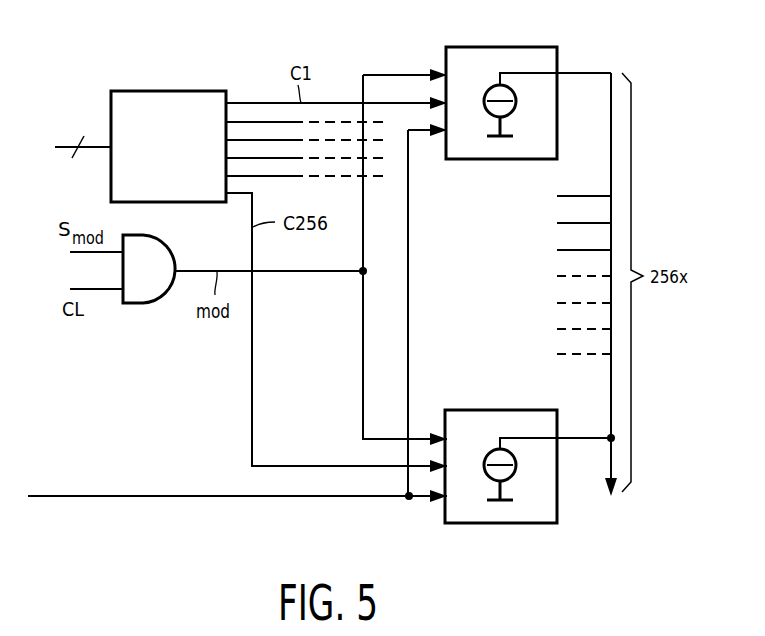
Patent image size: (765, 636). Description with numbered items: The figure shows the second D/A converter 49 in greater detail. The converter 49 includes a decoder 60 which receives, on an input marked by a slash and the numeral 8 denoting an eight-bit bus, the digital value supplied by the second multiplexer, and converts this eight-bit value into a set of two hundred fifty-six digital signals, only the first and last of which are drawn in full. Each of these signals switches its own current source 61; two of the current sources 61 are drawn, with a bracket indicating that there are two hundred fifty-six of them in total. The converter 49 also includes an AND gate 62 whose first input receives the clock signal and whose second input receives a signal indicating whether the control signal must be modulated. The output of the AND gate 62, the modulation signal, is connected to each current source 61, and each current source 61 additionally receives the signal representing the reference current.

The decoder 60 is at (182, 108).
The current source 61 is at (478, 60).
The AND gate 62 is at (143, 288).
The 8-bit input bus 8 is at (83, 133).
The second D/A converter 49 is at (229, 520).